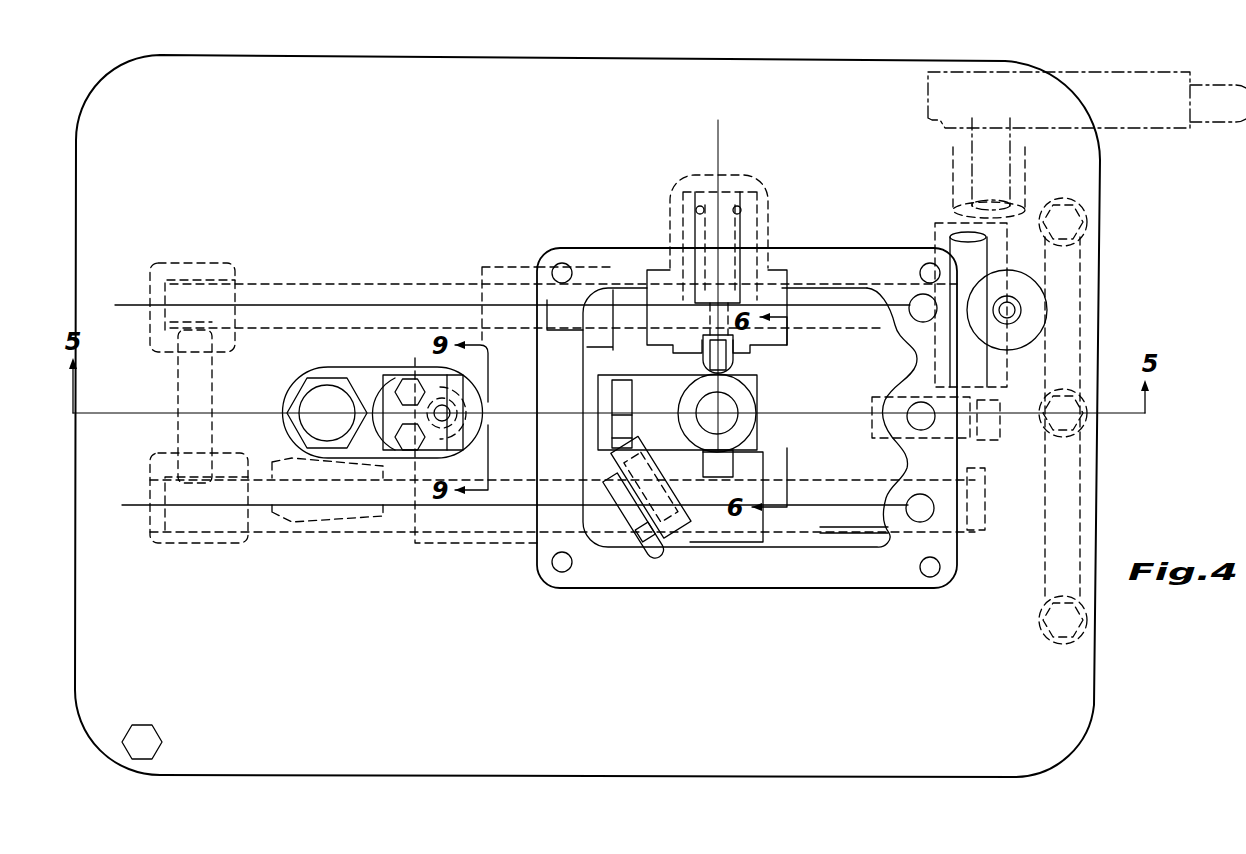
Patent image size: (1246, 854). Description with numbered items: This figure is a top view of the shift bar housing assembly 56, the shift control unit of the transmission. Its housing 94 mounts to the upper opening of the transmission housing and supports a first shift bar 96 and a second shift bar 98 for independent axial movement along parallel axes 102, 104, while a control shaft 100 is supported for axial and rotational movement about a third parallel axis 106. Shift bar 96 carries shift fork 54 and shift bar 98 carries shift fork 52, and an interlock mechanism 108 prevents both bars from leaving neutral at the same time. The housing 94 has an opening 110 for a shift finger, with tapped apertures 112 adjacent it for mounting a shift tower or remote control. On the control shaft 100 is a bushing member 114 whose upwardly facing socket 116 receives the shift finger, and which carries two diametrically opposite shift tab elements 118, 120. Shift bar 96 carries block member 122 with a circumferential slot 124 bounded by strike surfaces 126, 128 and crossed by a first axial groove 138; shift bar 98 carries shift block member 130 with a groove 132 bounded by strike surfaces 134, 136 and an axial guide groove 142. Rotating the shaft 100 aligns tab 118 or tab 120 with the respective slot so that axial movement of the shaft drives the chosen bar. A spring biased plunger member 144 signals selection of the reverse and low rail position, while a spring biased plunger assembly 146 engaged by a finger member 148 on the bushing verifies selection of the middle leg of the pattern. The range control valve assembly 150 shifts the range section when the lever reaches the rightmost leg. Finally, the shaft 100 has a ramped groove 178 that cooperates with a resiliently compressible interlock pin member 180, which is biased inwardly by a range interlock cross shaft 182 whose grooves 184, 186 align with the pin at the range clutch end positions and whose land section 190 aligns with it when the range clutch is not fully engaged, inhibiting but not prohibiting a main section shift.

The shift bar housing assembly 56 is at (238, 97).
The first shift bar 96 is at (360, 293).
The axis 102 is at (296, 310).
The axis 104 is at (138, 497).
The interlock mechanism 108 is at (176, 431).
The shift fork 52 is at (340, 530).
The range control valve assembly 150 is at (410, 358).
The axis 106 is at (488, 415).
The second shift bar 98 is at (467, 522).
The tapped apertures 112 is at (555, 268).
The control shaft 100 is at (847, 397).
The opening 110 is at (850, 290).
The block member 122 is at (750, 278).
The slot 124 is at (695, 282).
The shift fork 54 is at (650, 300).
The strike surface 128 is at (703, 356).
The strike surface 126 is at (748, 340).
The spring biased plunger member 144 is at (760, 346).
The first axial groove 138 is at (677, 340).
The shift tab element 118 is at (697, 377).
The strike surface 136 is at (677, 450).
The shift tab element 120 is at (725, 415).
The socket 116 is at (768, 398).
The bushing member 114 is at (748, 367).
The strike surface 134 is at (763, 458).
The shift block member 130 is at (752, 538).
The groove 132 is at (730, 503).
The guide groove 142 is at (678, 467).
The spring biased plunger assembly 146 is at (622, 537).
The finger member 148 is at (623, 435).
The interlock pin member 180 is at (993, 187).
The ramped groove 178 is at (1002, 460).
The groove 184 is at (928, 115).
The range interlock cross shaft 182 is at (1177, 135).
The groove 186 is at (990, 122).
The housing 94 is at (1052, 150).
The land section 190 is at (948, 130).